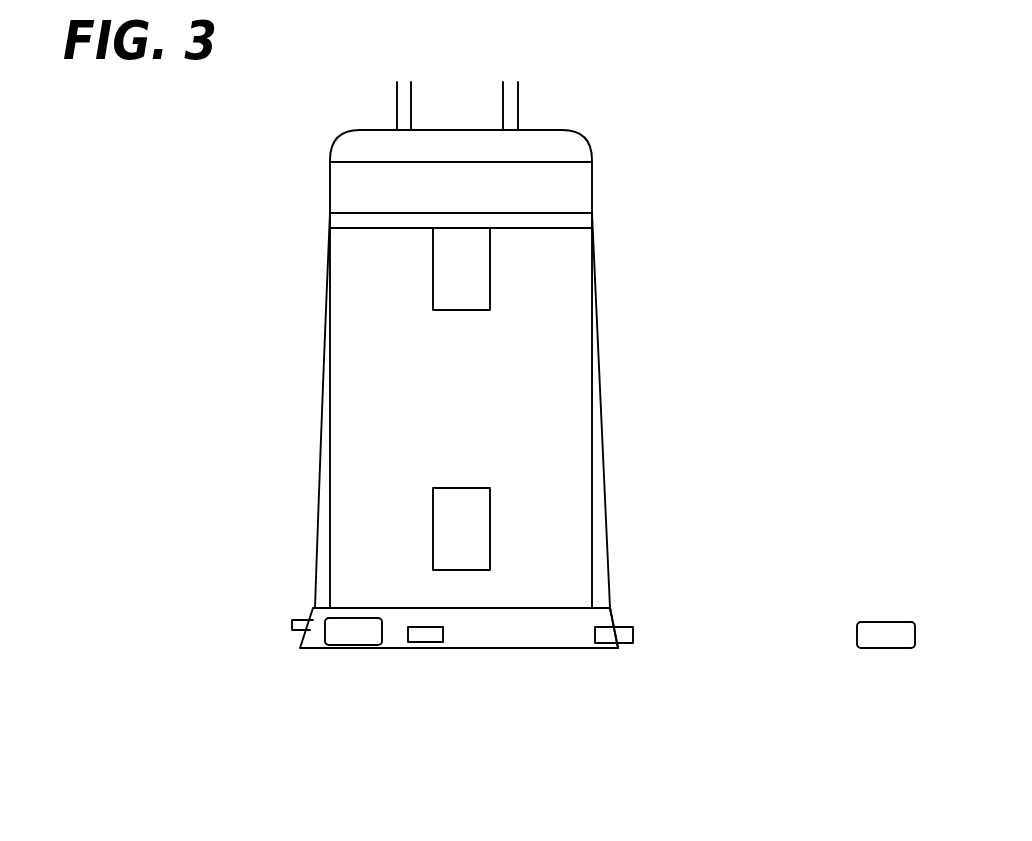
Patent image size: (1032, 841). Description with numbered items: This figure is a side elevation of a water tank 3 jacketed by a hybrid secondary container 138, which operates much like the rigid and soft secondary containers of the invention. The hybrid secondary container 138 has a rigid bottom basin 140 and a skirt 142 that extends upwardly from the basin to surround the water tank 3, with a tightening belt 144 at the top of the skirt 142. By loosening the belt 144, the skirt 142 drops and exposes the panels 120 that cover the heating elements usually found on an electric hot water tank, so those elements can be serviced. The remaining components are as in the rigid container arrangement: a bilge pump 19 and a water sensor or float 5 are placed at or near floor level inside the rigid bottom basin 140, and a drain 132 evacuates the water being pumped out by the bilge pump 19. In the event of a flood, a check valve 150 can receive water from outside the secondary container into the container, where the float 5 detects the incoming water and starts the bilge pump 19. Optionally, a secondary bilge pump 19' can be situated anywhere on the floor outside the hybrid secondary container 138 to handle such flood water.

The water tank 3 is at (310, 192).
The tightening belt 144 is at (572, 215).
The skirt 142 is at (318, 437).
The hybrid secondary container 138 is at (610, 395).
The panels 120 is at (472, 512).
The rigid bottom basin 140 is at (612, 622).
The check valve 150 is at (627, 635).
The drain 132 is at (292, 626).
The bilge pump 19 is at (348, 668).
The float 5 is at (428, 642).
The secondary bilge pump 19' is at (876, 673).